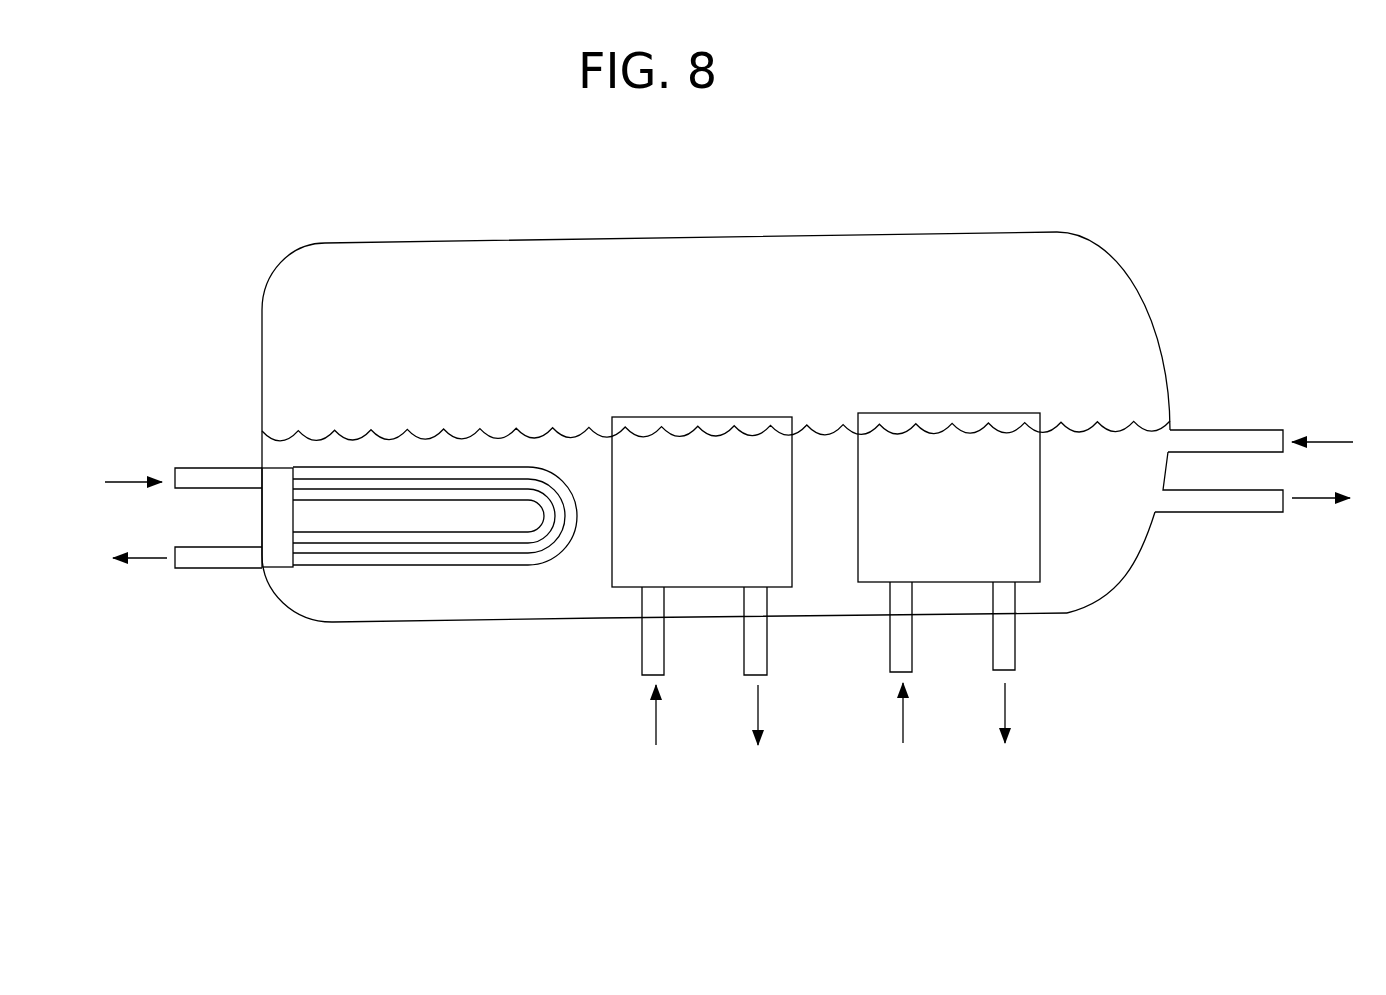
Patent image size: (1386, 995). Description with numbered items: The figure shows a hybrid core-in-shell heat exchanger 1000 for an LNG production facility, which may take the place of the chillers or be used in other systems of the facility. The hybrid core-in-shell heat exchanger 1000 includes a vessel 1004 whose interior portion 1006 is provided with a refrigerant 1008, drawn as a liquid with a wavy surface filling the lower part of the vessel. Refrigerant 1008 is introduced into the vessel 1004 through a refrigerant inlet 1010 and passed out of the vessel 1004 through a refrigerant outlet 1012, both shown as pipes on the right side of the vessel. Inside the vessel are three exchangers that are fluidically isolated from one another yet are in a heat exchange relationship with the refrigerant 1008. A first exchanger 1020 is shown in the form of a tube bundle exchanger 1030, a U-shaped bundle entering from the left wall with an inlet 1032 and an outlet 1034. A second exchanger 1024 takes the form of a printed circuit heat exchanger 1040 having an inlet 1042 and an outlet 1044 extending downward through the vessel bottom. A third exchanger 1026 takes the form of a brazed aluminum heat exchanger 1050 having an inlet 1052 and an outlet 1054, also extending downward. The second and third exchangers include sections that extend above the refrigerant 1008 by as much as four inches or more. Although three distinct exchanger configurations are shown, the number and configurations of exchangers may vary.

The hybrid core-in-shell heat exchanger 1000 is at (726, 410).
The vessel 1004 is at (747, 444).
The interior portion 1006 is at (1088, 278).
The refrigerant 1008 is at (1102, 557).
The refrigerant inlet 1010 is at (1213, 430).
The refrigerant outlet 1012 is at (1232, 500).
The first exchanger 1020 is at (379, 603).
The second exchanger 1024 is at (562, 592).
The third exchanger 1026 is at (822, 418).
The tube bundle exchanger 1030 is at (278, 468).
The inlet 1032 is at (202, 475).
The outlet 1034 is at (195, 560).
The printed circuit heat exchanger 1040 is at (690, 412).
The inlet 1042 is at (642, 650).
The outlet 1044 is at (767, 655).
The brazed aluminum heat exchanger 1050 is at (922, 407).
The inlet 1052 is at (890, 657).
The outlet 1054 is at (1015, 647).